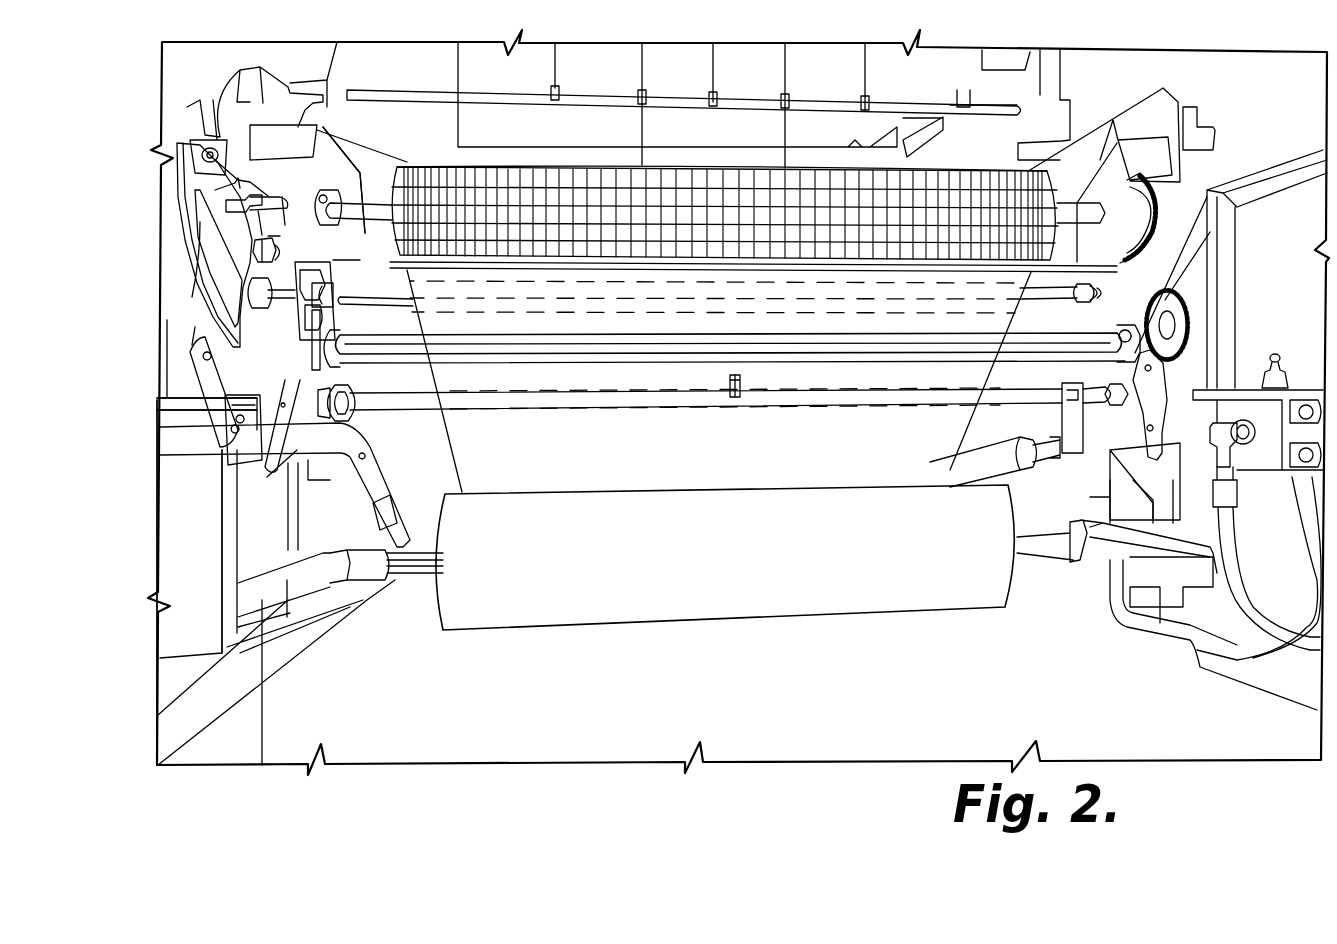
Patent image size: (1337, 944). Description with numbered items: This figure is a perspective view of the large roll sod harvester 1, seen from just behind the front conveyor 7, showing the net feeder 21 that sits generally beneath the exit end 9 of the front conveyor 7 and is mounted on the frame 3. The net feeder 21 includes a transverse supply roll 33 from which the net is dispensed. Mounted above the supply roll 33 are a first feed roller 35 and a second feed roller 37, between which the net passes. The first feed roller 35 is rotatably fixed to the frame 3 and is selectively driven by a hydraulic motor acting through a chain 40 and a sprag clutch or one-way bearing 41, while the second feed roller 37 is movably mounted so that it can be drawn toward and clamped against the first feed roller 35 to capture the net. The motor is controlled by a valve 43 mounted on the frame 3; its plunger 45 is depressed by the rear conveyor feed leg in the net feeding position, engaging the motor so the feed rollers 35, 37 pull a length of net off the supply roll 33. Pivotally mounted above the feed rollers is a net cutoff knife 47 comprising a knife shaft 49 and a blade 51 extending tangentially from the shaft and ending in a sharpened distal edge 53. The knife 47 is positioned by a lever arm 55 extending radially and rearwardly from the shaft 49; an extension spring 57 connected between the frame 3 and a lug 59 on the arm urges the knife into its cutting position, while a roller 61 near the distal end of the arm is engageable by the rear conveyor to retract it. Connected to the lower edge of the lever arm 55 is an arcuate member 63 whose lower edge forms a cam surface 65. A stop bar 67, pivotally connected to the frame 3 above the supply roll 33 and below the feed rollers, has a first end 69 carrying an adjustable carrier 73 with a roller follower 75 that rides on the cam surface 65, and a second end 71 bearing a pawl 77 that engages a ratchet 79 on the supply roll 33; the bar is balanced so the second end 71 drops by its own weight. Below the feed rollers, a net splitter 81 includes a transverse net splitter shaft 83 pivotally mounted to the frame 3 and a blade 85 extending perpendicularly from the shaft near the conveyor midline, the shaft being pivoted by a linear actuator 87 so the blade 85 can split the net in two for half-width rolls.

The large roll sod harvester 1 is at (1205, 100).
The frame 3 is at (1227, 187).
The front conveyor 7 is at (968, 176).
The exit end 9 is at (388, 165).
The net feeder 21 is at (210, 548).
The supply roll 33 is at (726, 578).
The first feed roller 35 is at (412, 334).
The second feed roller 37 is at (532, 357).
The chain 40 is at (1173, 357).
The sprag clutch or one-way bearing 41 is at (268, 420).
The valve 43 is at (1250, 387).
The plunger 45 is at (1277, 357).
The net cutoff knife 47 is at (1100, 293).
The knife shaft 49 is at (280, 273).
The blade 51 is at (348, 297).
The sharpened distal edge 53 is at (348, 305).
The lever arm 55 is at (268, 196).
The extension spring 57 is at (270, 245).
The lug 59 is at (287, 210).
The roller 61 is at (202, 142).
The arcuate member 63 is at (214, 245).
The cam surface 65 is at (192, 297).
The stop bar 67 is at (302, 485).
The first end 69 is at (228, 463).
The second end 71 is at (380, 505).
The adjustable carrier 73 is at (203, 407).
The roller follower 75 is at (203, 390).
The pawl 77 is at (400, 500).
The ratchet 79 is at (400, 580).
The net splitter 81 is at (616, 405).
The net splitter shaft 83 is at (693, 407).
The blade 85 is at (738, 382).
The linear actuator 87 is at (1022, 472).